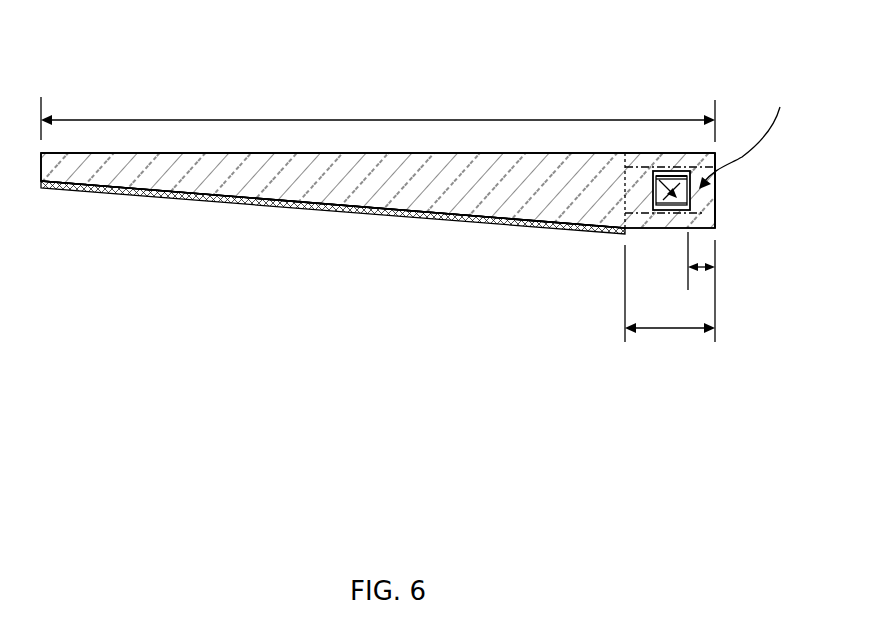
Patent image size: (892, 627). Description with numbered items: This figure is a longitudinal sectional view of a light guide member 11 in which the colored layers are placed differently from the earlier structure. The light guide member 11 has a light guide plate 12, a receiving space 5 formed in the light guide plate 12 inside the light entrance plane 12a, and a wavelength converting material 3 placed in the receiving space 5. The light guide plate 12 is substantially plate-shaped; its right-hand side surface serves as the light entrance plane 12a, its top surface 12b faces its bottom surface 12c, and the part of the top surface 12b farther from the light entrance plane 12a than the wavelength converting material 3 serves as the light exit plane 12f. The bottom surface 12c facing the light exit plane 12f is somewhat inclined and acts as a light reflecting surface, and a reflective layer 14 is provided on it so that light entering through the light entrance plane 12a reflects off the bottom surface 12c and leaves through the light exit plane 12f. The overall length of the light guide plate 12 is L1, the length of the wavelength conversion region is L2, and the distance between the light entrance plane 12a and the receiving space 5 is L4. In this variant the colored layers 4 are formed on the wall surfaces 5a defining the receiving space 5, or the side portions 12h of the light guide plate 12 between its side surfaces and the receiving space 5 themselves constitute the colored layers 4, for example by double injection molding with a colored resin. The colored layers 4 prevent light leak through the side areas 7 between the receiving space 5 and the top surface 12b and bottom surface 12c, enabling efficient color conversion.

The light guide member 11 is at (451, 76).
The light guide plate 12 is at (330, 168).
The top surface 12b is at (130, 152).
The light exit plane 12f is at (227, 152).
The bottom surface 12c is at (222, 199).
The light entrance plane 12a is at (716, 192).
The side portions 12h is at (690, 166).
The reflective layer 14 is at (372, 212).
The wavelength converting material 3 is at (653, 190).
The colored layers 4 is at (660, 178).
The receiving space 5 is at (677, 208).
The wall surfaces 5a is at (661, 173).
The side areas 7 is at (745, 136).
The length dimension of the light guide plate L1 is at (385, 120).
The length dimension of the wavelength conversion region L2 is at (670, 329).
The distance between the light entrance plane and the receiving space L4 is at (712, 270).